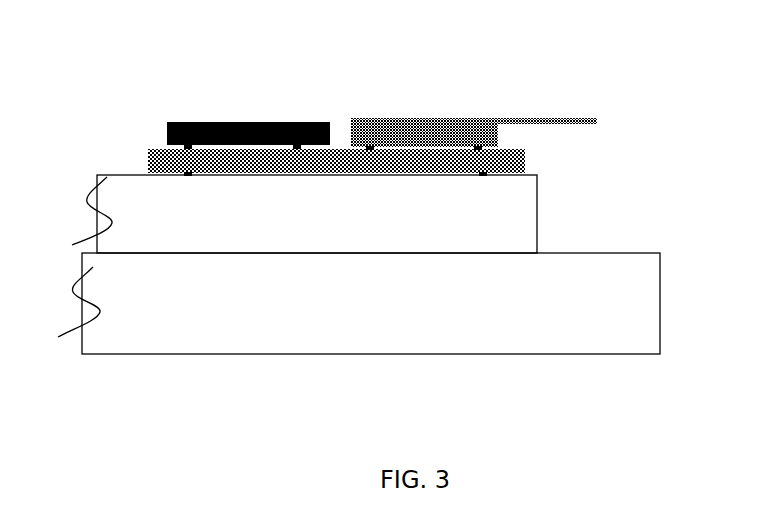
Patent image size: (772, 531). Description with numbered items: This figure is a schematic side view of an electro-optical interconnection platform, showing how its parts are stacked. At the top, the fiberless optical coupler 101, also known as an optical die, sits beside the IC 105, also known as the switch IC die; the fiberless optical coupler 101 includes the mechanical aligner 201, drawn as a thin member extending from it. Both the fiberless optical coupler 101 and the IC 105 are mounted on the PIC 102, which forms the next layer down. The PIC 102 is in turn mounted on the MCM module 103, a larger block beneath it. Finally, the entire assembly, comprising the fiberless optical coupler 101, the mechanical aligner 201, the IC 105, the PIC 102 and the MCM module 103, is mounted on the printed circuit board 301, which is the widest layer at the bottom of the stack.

The fiberless optical coupler 101 is at (366, 118).
The PIC 102 is at (167, 160).
The MCM module 103 is at (304, 214).
The IC 105 is at (165, 135).
The mechanical aligner 201 is at (575, 120).
The printed circuit board (PCB) 301 is at (359, 303).